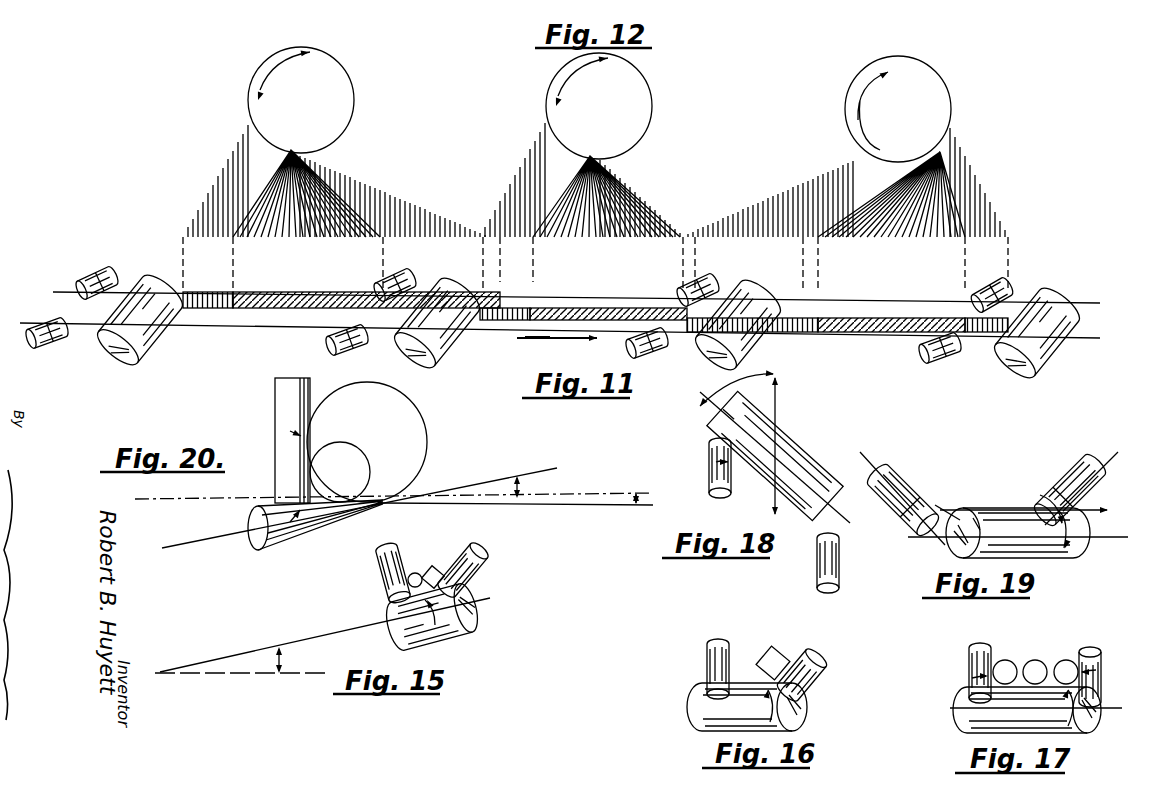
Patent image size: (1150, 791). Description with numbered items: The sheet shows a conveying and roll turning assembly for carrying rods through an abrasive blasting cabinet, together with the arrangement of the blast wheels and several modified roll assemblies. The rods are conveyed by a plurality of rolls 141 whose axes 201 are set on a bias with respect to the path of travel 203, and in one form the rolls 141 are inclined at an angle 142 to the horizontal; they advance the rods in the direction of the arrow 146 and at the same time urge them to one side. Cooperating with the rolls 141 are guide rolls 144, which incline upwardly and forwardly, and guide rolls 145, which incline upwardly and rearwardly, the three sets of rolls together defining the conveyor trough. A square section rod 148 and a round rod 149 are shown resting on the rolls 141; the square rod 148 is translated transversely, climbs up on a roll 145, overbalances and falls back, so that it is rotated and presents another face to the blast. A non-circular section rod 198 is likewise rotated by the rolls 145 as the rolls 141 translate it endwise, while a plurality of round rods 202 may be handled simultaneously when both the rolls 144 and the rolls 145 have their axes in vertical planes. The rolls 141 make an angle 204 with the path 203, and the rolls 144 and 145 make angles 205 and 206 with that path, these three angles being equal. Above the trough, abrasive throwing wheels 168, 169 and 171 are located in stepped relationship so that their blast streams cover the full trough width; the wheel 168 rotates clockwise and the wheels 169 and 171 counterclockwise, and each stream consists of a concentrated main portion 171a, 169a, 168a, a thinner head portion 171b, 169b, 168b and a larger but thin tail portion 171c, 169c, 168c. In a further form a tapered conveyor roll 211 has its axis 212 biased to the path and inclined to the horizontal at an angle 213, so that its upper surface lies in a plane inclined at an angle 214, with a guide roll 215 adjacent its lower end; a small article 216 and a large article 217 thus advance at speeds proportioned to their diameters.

In FIG. 12, the abrasive throwing wheel 171 is at (354, 110).
In FIG. 12, the main blasting portion 171a is at (325, 232).
In FIG. 12, the head portion 171b is at (216, 182).
In FIG. 12, the tail portion 171c is at (385, 186).
In FIG. 12, the abrasive throwing wheel 169 is at (648, 112).
In FIG. 12, the main blasting portion 169a is at (622, 210).
In FIG. 12, the head portion 169b is at (515, 186).
In FIG. 12, the tail portion 169c is at (670, 188).
In FIG. 12, the abrasive throwing wheel 168 is at (850, 118).
In FIG. 12, the main blasting portion 168a is at (910, 214).
In FIG. 12, the head portion 168b is at (822, 186).
In FIG. 12, the tail portion 168c is at (972, 196).
In FIG. 11, the conveyor roll 141 is at (1060, 360).
In FIG. 15, the conveyor roll 141 is at (466, 630).
In FIG. 18, the conveyor roll 141 is at (790, 450).
In FIG. 19, the conveyor roll 141 is at (1060, 560).
In FIG. 16, the conveyor roll 141 is at (702, 712).
In FIG. 17, the conveyor roll 141 is at (962, 728).
In FIG. 11, the guide roll 144 is at (990, 287).
In FIG. 15, the guide roll 144 is at (386, 555).
In FIG. 18, the guide roll 144 is at (710, 480).
In FIG. 19, the guide roll 144 is at (1072, 478).
In FIG. 16, the guide roll 144 is at (734, 634).
In FIG. 17, the guide roll 144 is at (970, 662).
In FIG. 11, the guide roll 145 is at (951, 370).
In FIG. 15, the guide roll 145 is at (478, 556).
In FIG. 18, the guide roll 145 is at (818, 576).
In FIG. 19, the guide roll 145 is at (916, 504).
In FIG. 16, the guide roll 145 is at (822, 652).
In FIG. 17, the guide roll 145 is at (1094, 648).
In FIG. 11, the direction of travel arrow 146 is at (560, 340).
In FIG. 15, the angle of roll inclination 142 is at (276, 656).
In FIG. 15, the square section rod 148 is at (436, 564).
In FIG. 15, the round rod 149 is at (414, 572).
In FIG. 16, the non-circular section rod 198 is at (776, 648).
In FIG. 18, the roll axis 201 is at (838, 508).
In FIG. 19, the roll axis 201 is at (868, 512).
In FIG. 17, the roll axis 201 is at (948, 706).
In FIG. 17, the round rods 202 is at (1060, 660).
In FIG. 18, the path of travel 203 is at (766, 506).
In FIG. 19, the path of travel 203 is at (1088, 514).
In FIG. 18, the roll angle 204 is at (704, 402).
In FIG. 19, the guide roll angle 205 is at (1046, 496).
In FIG. 19, the guide roll angle 206 is at (912, 546).
In FIG. 20, the tapered conveyor roll 211 is at (295, 540).
In FIG. 20, the axis of tapered roll 212 is at (495, 490).
In FIG. 20, the axis inclination angle 213 is at (520, 486).
In FIG. 20, the upper surface inclination angle 214 is at (640, 498).
In FIG. 20, the guide roll 215 is at (292, 440).
In FIG. 20, the small diameter article 216 is at (366, 466).
In FIG. 20, the large diameter article 217 is at (420, 412).